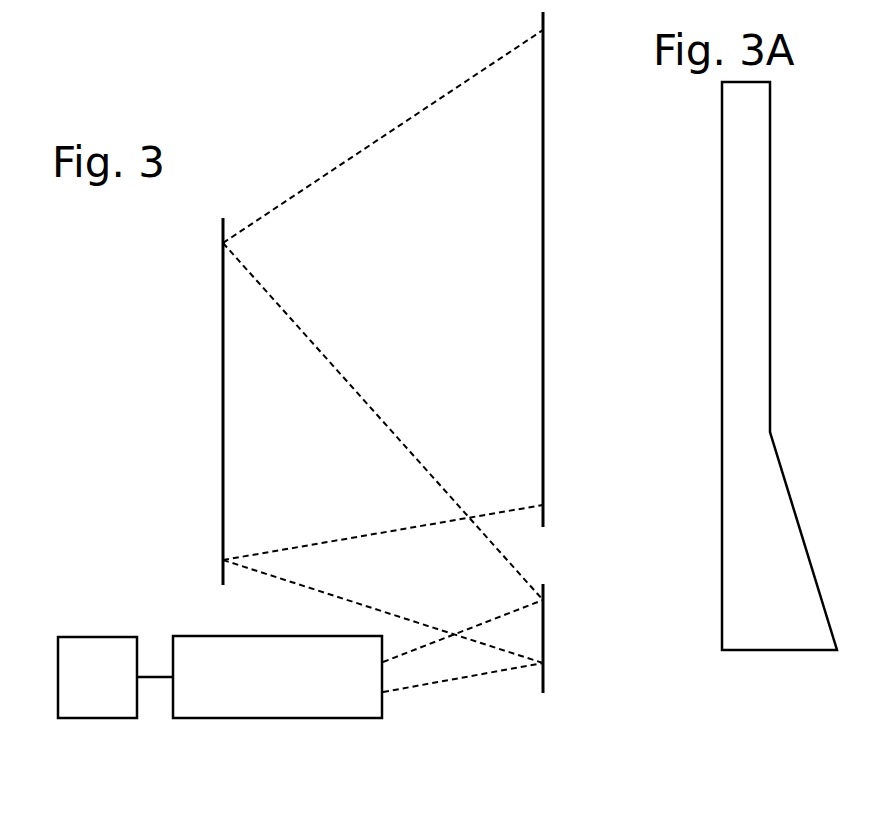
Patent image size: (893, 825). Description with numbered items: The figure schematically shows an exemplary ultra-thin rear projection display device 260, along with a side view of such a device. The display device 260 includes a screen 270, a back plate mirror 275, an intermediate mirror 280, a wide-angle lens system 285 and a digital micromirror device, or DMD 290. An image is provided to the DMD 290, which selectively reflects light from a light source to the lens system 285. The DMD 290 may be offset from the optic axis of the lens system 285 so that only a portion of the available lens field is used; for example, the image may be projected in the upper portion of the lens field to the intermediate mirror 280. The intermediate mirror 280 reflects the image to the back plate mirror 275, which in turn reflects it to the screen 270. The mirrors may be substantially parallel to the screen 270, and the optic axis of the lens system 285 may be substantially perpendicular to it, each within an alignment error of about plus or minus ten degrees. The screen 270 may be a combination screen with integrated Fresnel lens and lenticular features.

The ultra-thin rear projection display device 260 is at (219, 80).
The screen 270 is at (543, 262).
The back plate mirror 275 is at (224, 410).
The intermediate mirror 280 is at (544, 633).
The lens system 285 is at (250, 636).
The digital micromirror device (DMD) 290 is at (64, 637).